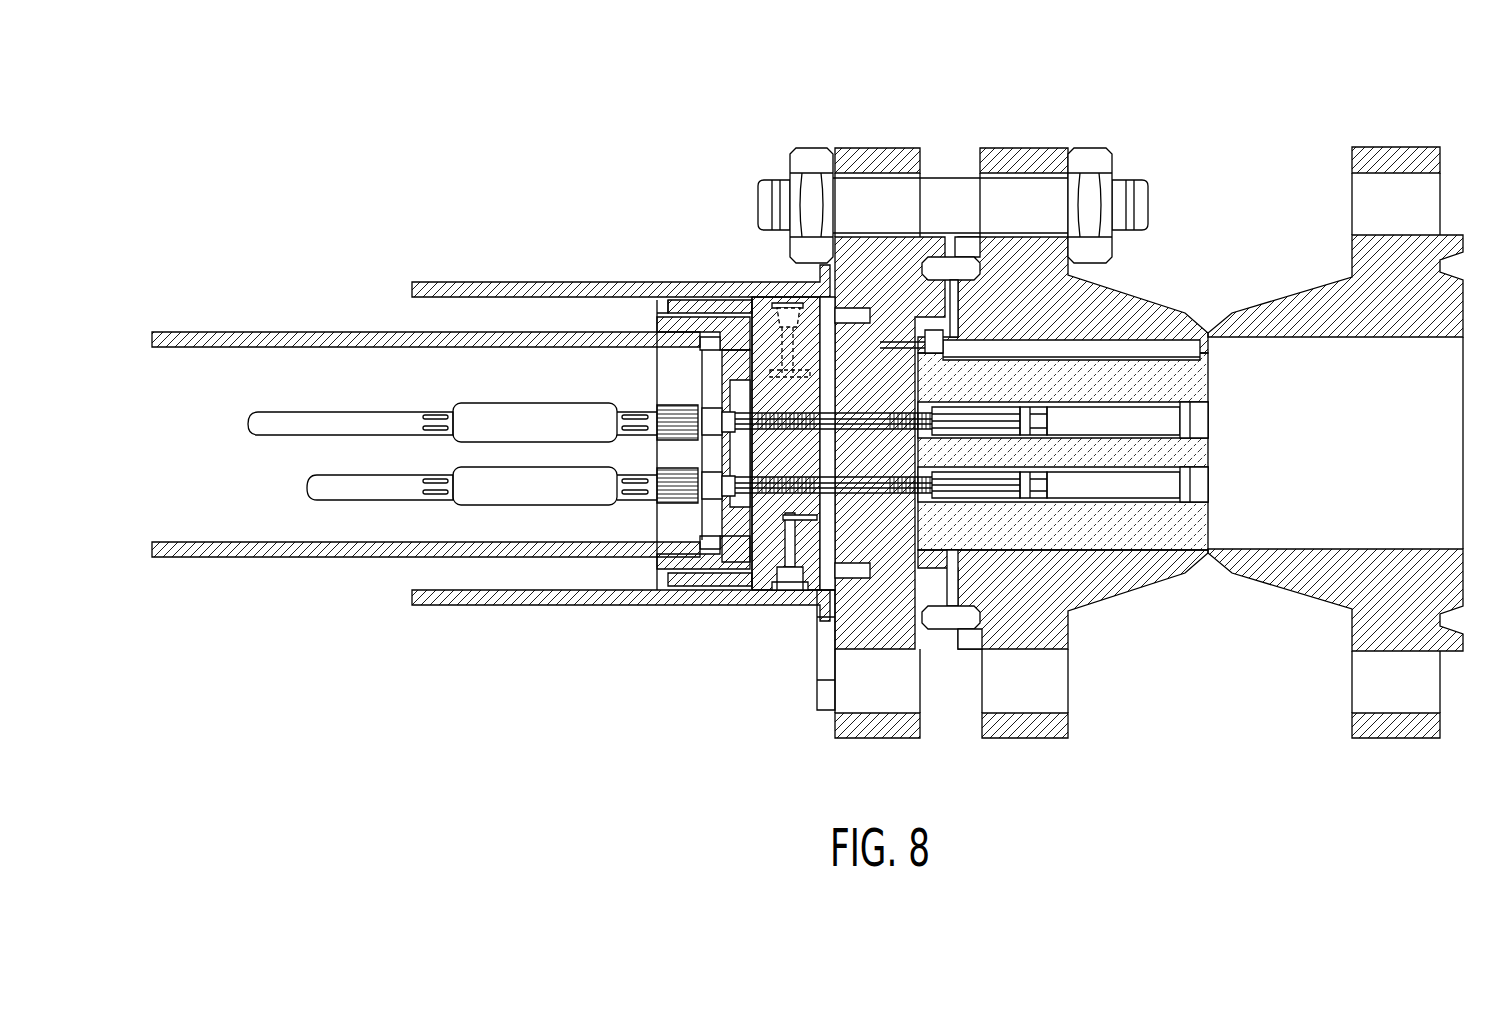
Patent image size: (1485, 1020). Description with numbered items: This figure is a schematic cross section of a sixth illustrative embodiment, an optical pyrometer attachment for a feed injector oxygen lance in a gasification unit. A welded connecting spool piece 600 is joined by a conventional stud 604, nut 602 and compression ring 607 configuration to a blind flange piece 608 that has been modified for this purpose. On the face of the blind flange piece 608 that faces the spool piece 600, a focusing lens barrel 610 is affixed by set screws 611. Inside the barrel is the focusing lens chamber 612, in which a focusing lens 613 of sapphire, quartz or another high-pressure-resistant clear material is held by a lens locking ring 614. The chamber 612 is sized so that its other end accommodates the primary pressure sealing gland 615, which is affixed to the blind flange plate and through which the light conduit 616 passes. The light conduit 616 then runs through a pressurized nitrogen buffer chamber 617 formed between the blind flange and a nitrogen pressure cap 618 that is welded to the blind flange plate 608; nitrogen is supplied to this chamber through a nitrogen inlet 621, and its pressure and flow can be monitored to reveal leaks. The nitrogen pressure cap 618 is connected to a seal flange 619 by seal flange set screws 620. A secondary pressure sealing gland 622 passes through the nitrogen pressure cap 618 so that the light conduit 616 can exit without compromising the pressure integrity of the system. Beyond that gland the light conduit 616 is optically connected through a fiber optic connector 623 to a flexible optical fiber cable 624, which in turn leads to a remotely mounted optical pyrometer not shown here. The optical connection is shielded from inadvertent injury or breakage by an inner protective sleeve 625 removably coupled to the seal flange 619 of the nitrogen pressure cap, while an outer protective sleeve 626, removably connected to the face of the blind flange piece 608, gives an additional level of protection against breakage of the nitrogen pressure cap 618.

The welded connecting spool piece 600 is at (1275, 575).
The nut 602 is at (812, 158).
The stud 604 is at (1138, 177).
The compression ring 607 is at (953, 257).
The blind flange piece 608 is at (880, 735).
The focusing lens barrel 610 is at (1127, 380).
The set screws 611 is at (937, 330).
The focusing lens chamber 612 is at (1062, 492).
The focusing lens 613 is at (1190, 405).
The lens locking ring 614 is at (1210, 380).
The primary pressure sealing gland 615 is at (980, 492).
The light conduit 616 is at (822, 593).
The pressurized nitrogen buffer chamber 617 is at (825, 360).
The nitrogen pressure cap 618 is at (728, 307).
The seal flange 619 is at (692, 490).
The seal flange set screws 620 is at (700, 350).
The nitrogen inlet 621 is at (790, 598).
The secondary pressure sealing gland 622 is at (755, 493).
The fiber optic connector 623 is at (675, 485).
The flexible optical fiber cable 624 is at (507, 500).
The inner protective sleeve 625 is at (265, 333).
The outer protective sleeve 626 is at (507, 283).